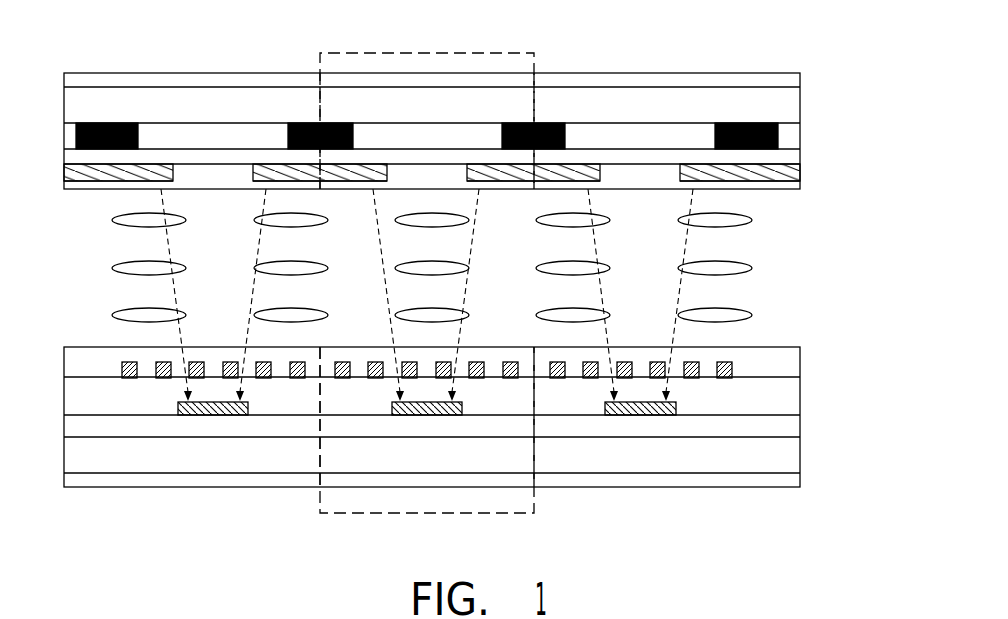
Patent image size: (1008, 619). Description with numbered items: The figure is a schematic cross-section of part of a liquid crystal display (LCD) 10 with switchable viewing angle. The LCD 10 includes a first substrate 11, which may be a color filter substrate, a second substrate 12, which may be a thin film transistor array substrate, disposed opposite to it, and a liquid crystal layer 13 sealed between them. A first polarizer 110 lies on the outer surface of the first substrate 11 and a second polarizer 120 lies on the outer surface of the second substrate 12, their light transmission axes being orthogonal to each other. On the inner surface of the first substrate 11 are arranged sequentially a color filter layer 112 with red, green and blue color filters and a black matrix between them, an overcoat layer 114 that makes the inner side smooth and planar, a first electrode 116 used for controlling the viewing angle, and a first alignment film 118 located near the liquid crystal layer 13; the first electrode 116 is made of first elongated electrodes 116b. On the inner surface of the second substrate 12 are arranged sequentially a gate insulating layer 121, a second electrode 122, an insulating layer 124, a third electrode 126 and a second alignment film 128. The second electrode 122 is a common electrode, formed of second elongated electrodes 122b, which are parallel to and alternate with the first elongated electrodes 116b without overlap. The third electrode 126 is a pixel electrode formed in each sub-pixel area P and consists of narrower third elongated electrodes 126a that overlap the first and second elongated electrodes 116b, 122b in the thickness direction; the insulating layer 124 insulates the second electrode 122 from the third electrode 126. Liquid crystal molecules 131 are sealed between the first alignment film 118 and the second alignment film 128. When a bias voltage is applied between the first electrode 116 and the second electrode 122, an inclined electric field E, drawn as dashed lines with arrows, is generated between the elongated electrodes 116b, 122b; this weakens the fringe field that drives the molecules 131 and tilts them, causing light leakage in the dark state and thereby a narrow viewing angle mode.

The liquid crystal display 10 is at (484, 38).
The first substrate 11 is at (787, 107).
The first polarizer 110 is at (788, 79).
The color filter layer 112 is at (696, 138).
The overcoat layer 114 is at (790, 155).
The first electrode 116 is at (234, 175).
The first elongated electrodes 116b is at (740, 172).
The first alignment film 118 is at (790, 184).
The liquid crystal layer 13 is at (110, 292).
The liquid crystal molecules 131 is at (740, 265).
The inclined electric field E is at (168, 245).
The second substrate 12 is at (775, 455).
The second alignment film 128 is at (777, 362).
The insulating layer 124 is at (777, 397).
The gate insulating layer 121 is at (780, 426).
The second polarizer 120 is at (785, 478).
The third electrode 126 is at (745, 361).
The third elongated electrodes 126a is at (130, 370).
The second electrode 122 is at (692, 405).
The second elongated electrodes 122b is at (210, 412).
The sub-pixel area P is at (535, 505).